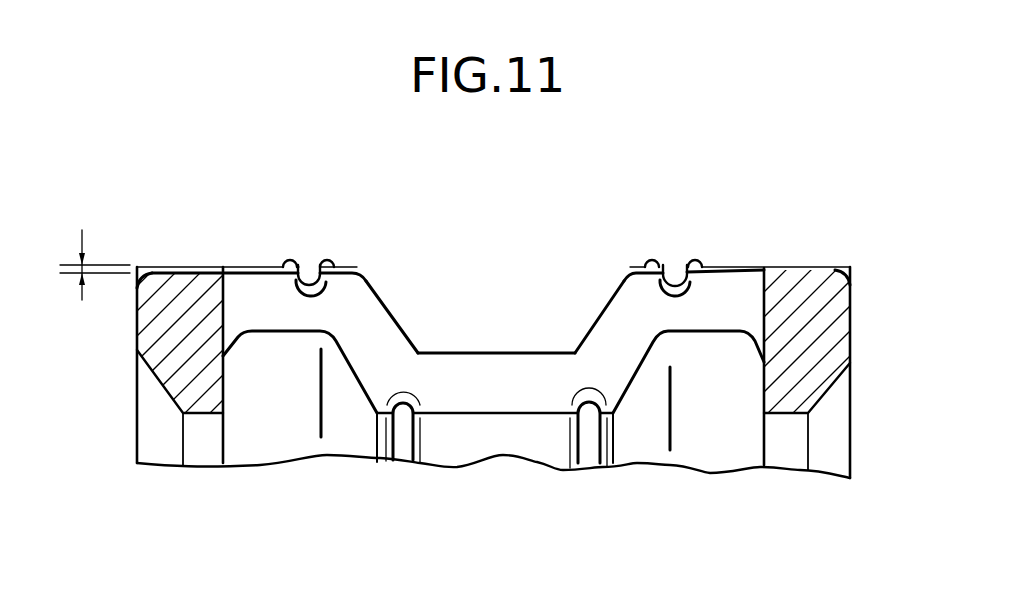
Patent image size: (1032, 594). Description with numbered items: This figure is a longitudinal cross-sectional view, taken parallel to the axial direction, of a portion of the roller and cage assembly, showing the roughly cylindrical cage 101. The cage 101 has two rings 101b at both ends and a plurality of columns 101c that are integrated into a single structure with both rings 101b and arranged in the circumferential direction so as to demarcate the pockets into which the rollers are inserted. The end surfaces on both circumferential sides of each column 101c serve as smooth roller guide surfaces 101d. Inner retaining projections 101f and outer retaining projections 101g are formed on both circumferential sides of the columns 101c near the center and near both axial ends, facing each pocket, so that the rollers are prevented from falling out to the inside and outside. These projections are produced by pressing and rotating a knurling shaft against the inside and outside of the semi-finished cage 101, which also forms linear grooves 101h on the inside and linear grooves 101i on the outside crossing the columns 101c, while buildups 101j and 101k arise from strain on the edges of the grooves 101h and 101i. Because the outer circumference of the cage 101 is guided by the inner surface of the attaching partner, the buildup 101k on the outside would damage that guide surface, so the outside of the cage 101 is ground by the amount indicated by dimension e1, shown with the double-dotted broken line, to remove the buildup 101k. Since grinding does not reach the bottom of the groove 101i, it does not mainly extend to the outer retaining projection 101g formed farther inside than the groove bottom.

The cage 101 is at (874, 292).
The rings 101b is at (177, 297).
The columns 101c is at (494, 335).
The roller guide surfaces 101d is at (392, 328).
The inner retaining projections 101f is at (398, 400).
The outer retaining projections 101g is at (294, 284).
The linear grooves 101h is at (405, 456).
The linear grooves 101i is at (308, 282).
The buildups 101j is at (375, 468).
The buildups 101k is at (292, 258).
The grinding dimension e1 is at (95, 281).